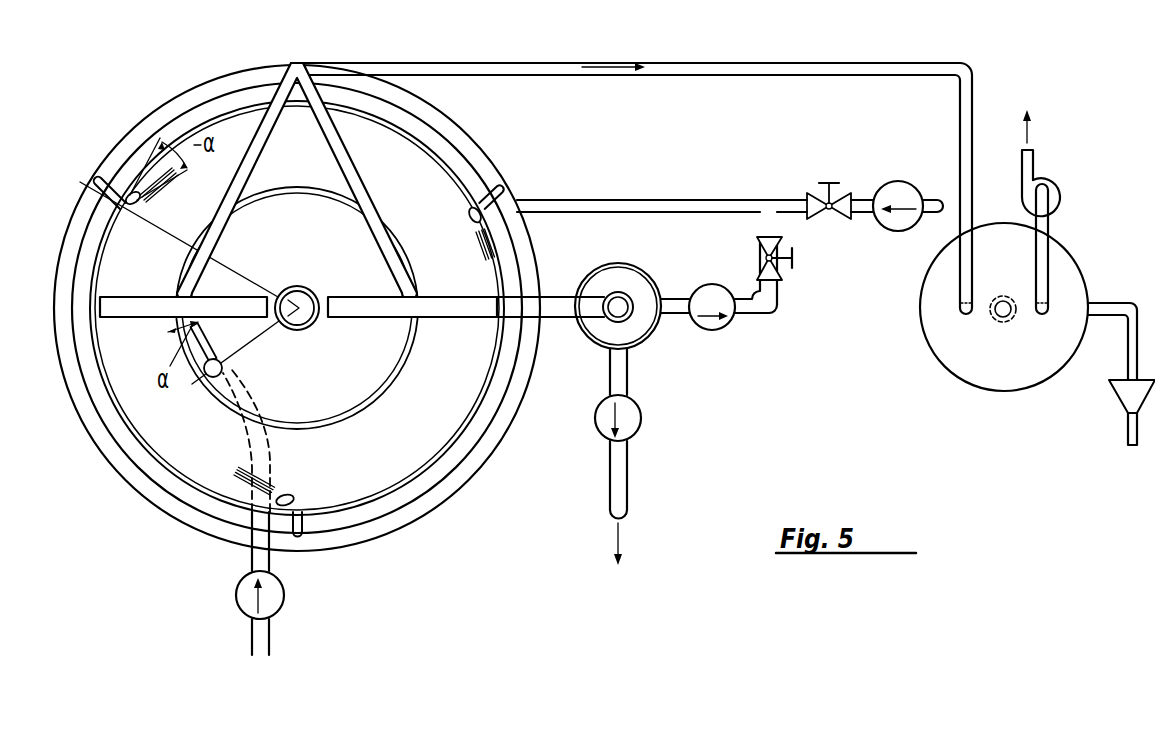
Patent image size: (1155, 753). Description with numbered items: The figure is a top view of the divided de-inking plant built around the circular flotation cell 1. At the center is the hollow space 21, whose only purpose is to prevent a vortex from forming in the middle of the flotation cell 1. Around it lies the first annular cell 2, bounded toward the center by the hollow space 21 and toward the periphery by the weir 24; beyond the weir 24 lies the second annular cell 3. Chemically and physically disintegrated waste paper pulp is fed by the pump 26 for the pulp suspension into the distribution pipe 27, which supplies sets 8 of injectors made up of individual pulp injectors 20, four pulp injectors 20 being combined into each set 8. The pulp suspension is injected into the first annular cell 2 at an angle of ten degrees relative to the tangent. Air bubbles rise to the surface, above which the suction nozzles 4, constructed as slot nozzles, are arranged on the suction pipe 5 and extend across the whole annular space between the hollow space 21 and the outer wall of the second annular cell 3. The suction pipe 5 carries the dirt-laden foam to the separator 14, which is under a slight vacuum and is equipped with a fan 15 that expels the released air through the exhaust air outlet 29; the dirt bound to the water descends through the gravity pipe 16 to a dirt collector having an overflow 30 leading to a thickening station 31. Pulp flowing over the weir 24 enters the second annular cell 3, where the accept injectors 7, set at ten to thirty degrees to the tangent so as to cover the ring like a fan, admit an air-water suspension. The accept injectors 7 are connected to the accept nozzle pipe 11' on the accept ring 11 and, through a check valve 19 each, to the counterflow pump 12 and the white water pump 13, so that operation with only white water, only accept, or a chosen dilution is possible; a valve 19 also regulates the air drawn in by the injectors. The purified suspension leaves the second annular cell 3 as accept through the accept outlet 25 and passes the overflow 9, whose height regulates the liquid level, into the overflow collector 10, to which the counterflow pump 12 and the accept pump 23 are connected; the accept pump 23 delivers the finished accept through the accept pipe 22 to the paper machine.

The flotation cell 1 is at (223, 104).
The first annular cell 2 is at (318, 192).
The second annular cell 3 is at (298, 106).
The suction nozzles 4 is at (137, 312).
The suction pipe 5 is at (547, 76).
The accept injectors 7 is at (132, 205).
The set of injectors 8 is at (206, 343).
The overflow 9 is at (630, 318).
The overflow collector 10 is at (600, 268).
The accept ring 11 is at (297, 308).
The accept nozzle pipe 11' is at (302, 362).
The counterflow pump 12 is at (730, 322).
The white water pump 13 is at (888, 190).
The separator 14 is at (937, 340).
The fan 15 is at (1056, 190).
The gravity pipe 16 is at (1000, 322).
The valve 19 is at (755, 243).
The pulp injectors 20 is at (203, 326).
The hollow space 21 is at (312, 322).
The accept pipe 22 is at (623, 480).
The accept pump 23 is at (641, 426).
The weir 24 is at (385, 400).
The accept outlet 25 is at (522, 320).
The pump for the pulp suspension 26 is at (240, 605).
The distribution pipe 27 is at (222, 370).
The vent outlet 29 is at (1032, 168).
The overflow 30 is at (1103, 300).
The thickening station 31 is at (1125, 395).